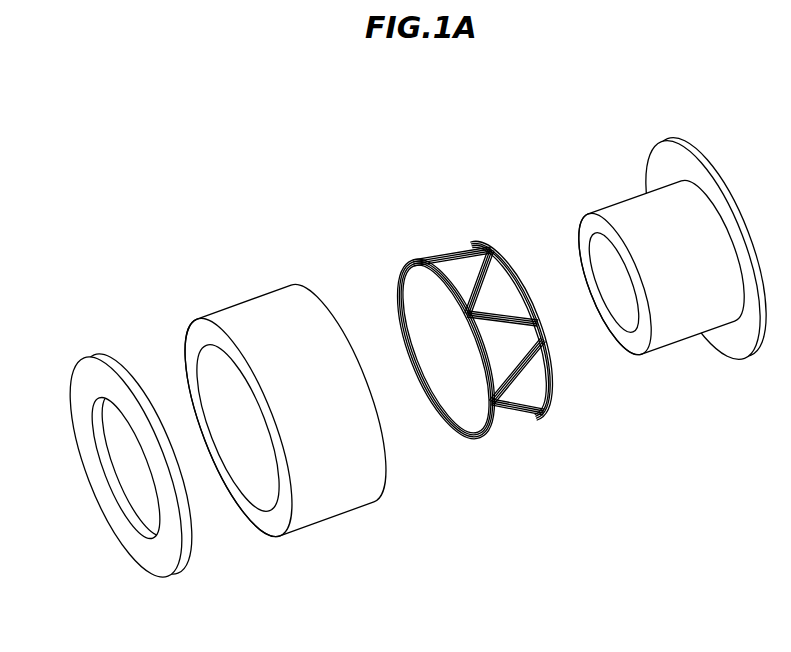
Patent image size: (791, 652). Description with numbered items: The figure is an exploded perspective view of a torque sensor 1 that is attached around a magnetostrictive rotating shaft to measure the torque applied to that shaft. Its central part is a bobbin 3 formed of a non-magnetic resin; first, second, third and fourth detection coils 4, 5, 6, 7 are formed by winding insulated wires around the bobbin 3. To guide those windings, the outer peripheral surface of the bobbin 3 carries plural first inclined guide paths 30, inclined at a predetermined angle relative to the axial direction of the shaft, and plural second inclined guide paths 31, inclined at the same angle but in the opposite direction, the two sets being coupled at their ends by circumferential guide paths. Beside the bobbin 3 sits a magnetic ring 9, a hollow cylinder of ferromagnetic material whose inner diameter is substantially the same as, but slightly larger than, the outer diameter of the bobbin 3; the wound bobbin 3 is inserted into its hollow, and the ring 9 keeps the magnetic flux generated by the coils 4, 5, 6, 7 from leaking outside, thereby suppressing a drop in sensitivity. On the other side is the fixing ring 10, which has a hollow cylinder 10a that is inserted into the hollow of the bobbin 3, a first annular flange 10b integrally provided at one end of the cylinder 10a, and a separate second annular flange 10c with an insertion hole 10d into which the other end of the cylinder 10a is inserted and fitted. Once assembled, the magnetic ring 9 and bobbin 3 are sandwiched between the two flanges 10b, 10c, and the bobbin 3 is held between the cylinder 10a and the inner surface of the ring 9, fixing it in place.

The torque sensor 1 is at (271, 174).
The bobbin 3 is at (419, 224).
The first detection coil 4 is at (452, 225).
The fourth detection coil 7 is at (458, 252).
The second detection coil 5 is at (547, 371).
The third detection coil 6 is at (522, 372).
The first inclined guide paths 30 is at (520, 412).
The second inclined guide paths 31 is at (502, 280).
The magnetic ring 9 is at (268, 303).
The fixing ring 10 is at (606, 165).
The hollow cylinder 10a is at (683, 320).
The first annular flange 10b is at (736, 345).
The second annular flange 10c is at (181, 562).
The insertion hole 10d is at (120, 487).